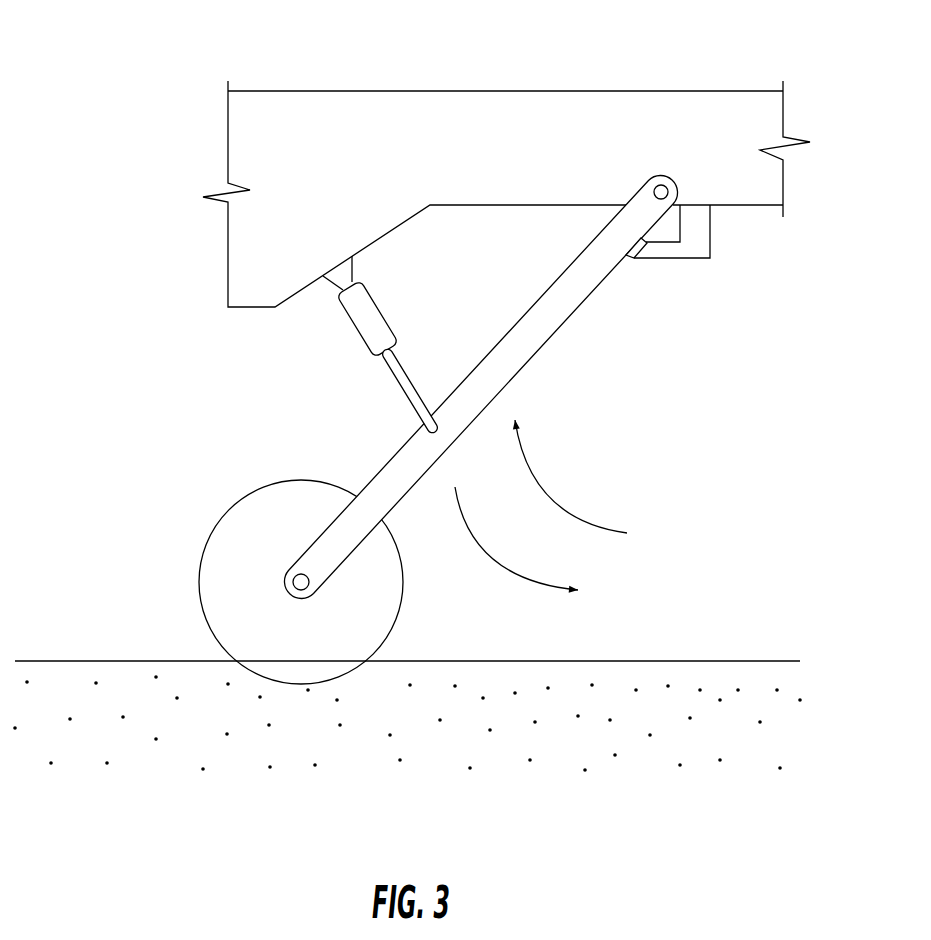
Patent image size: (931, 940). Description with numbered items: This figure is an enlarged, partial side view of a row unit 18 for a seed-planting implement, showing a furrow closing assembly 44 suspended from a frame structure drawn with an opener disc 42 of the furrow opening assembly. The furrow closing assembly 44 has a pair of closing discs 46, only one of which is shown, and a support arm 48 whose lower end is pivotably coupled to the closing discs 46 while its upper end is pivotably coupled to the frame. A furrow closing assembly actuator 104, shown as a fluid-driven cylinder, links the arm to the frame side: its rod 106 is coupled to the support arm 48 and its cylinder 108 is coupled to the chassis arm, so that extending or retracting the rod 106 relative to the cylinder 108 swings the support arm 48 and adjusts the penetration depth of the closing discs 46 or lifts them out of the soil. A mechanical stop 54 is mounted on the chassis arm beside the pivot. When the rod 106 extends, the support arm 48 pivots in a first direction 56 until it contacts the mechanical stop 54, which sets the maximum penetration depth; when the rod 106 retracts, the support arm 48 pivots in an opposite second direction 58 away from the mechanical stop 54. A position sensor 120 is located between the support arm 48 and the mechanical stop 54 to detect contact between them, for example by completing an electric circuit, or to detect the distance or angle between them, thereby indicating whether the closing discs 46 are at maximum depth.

The row unit 18 is at (85, 107).
The opener disc 42 is at (422, 90).
The furrow closing assembly 44 is at (182, 513).
The closing disc 46 is at (199, 583).
The support arm 48 is at (545, 343).
The mechanical stop 54 is at (693, 258).
The first direction 56 is at (492, 550).
The second direction 58 is at (562, 498).
The furrow closing assembly actuator 104 is at (352, 345).
The rod 106 is at (410, 373).
The cylinder 108 is at (382, 300).
The position sensor 120 is at (634, 257).